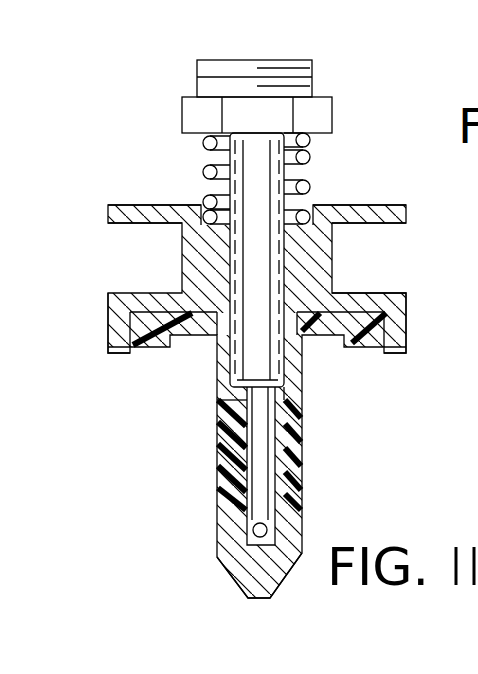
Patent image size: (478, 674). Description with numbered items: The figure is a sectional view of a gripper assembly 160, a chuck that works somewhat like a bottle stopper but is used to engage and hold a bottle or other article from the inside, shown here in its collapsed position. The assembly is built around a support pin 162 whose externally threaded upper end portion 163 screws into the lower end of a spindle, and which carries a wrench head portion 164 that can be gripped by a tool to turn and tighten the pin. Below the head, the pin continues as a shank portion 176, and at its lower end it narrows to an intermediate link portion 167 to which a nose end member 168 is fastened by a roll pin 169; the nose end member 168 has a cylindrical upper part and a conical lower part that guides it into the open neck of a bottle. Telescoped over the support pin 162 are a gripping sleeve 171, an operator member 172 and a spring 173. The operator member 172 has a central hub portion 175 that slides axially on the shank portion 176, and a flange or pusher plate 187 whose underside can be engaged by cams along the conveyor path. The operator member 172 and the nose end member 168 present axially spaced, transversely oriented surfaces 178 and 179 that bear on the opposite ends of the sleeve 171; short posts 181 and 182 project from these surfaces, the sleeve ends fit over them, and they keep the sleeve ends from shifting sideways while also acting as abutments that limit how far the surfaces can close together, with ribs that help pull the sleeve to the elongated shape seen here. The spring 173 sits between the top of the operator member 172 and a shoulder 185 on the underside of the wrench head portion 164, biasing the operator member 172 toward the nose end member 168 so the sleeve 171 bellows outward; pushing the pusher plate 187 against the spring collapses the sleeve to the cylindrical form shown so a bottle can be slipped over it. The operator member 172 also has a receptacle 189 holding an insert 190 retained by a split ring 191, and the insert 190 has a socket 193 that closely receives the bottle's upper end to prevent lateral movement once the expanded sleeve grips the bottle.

The gripper assembly 160 is at (148, 452).
The support pin 162 is at (292, 55).
The externally threaded upper end portion 163 is at (312, 73).
The wrench head portion 164 is at (182, 105).
The intermediate link portion 167 is at (265, 458).
The nose end member 168 is at (302, 527).
The roll pin 169 is at (222, 555).
The gripping sleeve 171 is at (215, 435).
The operator member 172 is at (458, 202).
The spring 173 is at (312, 154).
The central hub portion 175 is at (182, 256).
The shank portion 176 is at (285, 262).
The surface 178 is at (217, 413).
The surface 179 is at (297, 497).
The short post 181 is at (278, 422).
The short post 182 is at (253, 490).
The shoulder 185 is at (192, 158).
The pusher plate 187 is at (108, 215).
The receptacle 189 is at (407, 322).
The insert 190 is at (155, 345).
The split ring 191 is at (140, 350).
The socket 193 is at (322, 335).